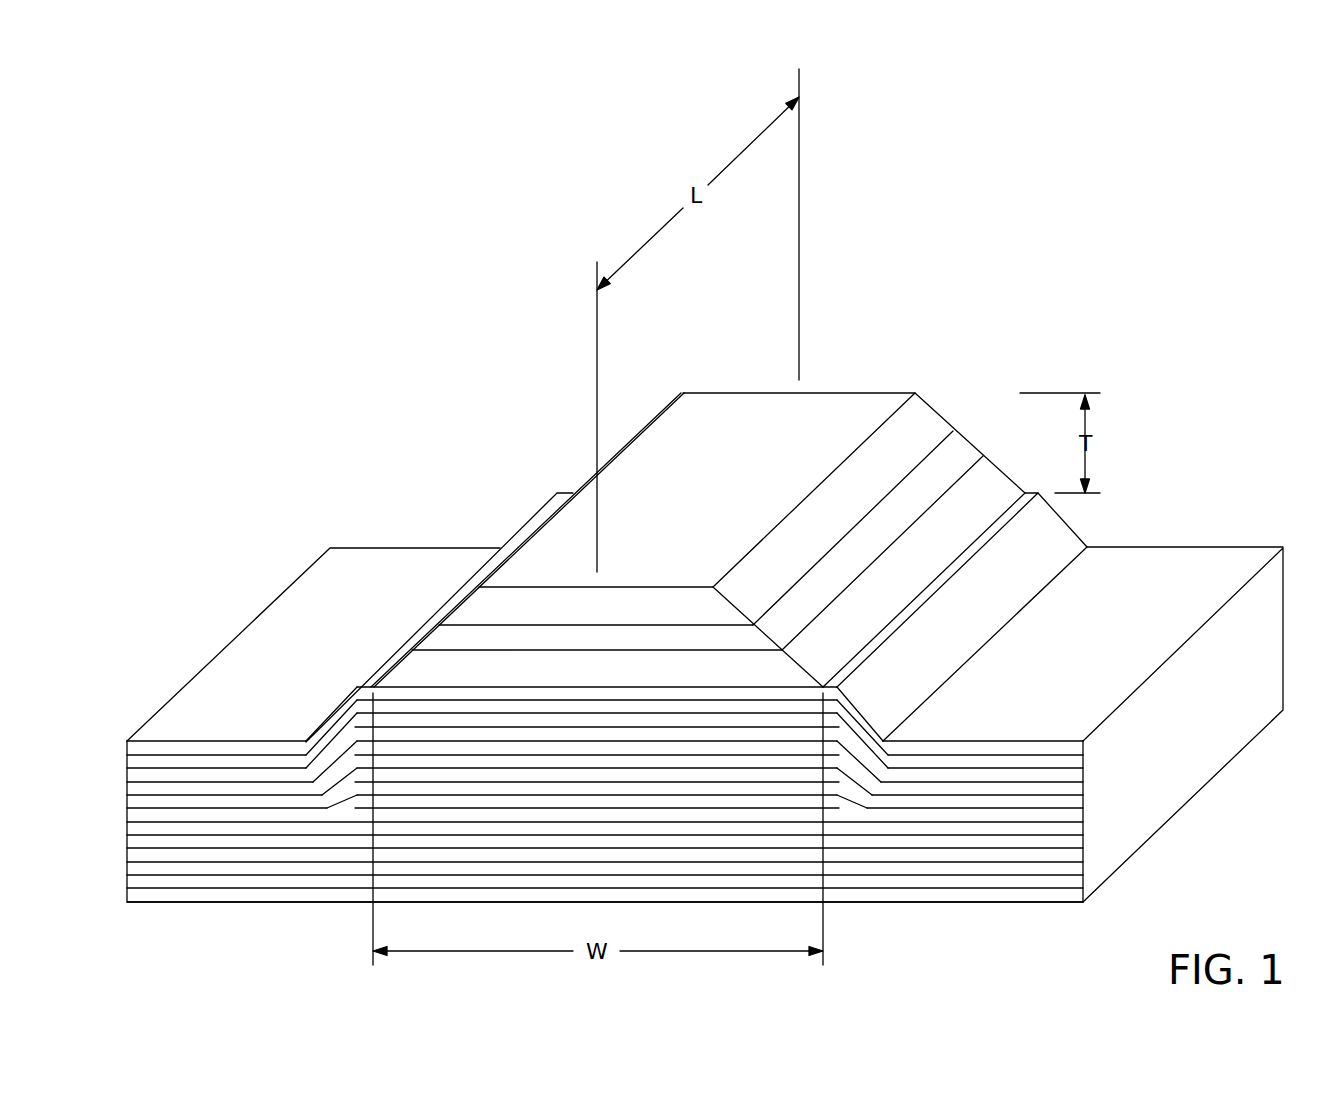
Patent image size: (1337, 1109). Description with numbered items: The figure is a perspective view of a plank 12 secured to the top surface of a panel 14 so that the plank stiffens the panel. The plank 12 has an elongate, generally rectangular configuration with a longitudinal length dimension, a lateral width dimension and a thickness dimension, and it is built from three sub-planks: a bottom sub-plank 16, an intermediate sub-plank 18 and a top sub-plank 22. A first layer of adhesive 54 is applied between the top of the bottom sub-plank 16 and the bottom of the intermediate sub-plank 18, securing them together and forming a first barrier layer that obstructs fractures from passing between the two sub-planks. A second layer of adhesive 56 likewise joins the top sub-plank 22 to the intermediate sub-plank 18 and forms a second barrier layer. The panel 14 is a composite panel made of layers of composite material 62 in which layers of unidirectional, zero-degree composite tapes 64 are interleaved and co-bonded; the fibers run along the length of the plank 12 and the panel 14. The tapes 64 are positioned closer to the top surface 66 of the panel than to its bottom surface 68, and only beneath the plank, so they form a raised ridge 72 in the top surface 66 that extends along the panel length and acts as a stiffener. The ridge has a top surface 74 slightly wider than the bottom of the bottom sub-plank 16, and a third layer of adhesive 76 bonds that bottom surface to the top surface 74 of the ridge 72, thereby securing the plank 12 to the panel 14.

The plank 12 is at (771, 518).
The panel 14 is at (1202, 667).
The bottom sub-plank 16 is at (460, 540).
The intermediate sub-plank 18 is at (530, 585).
The top sub-plank 22 is at (549, 557).
The first layer of adhesive 54 is at (982, 455).
The second layer of adhesive 56 is at (955, 428).
The layers of composite material 62 is at (1083, 741).
The layers of composite tapes 64 is at (873, 735).
The top surface of the composite panel 66 is at (1158, 580).
The bottom surface of the composite panel 68 is at (942, 903).
The raised ridge 72 is at (1008, 605).
The top surface of the ridge 74 is at (370, 682).
The third layer of adhesive 76 is at (1027, 493).